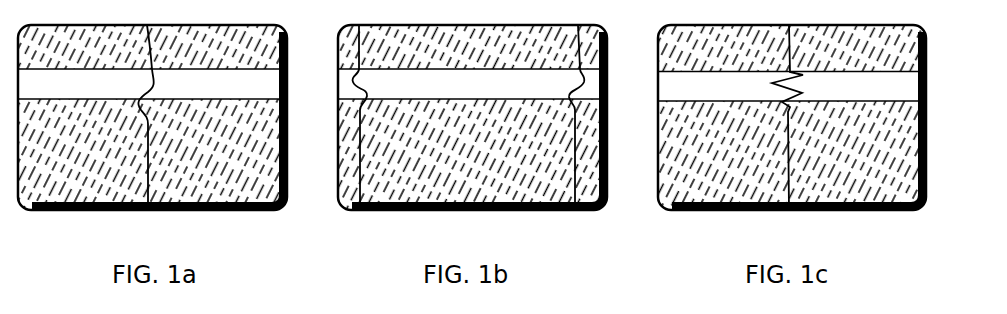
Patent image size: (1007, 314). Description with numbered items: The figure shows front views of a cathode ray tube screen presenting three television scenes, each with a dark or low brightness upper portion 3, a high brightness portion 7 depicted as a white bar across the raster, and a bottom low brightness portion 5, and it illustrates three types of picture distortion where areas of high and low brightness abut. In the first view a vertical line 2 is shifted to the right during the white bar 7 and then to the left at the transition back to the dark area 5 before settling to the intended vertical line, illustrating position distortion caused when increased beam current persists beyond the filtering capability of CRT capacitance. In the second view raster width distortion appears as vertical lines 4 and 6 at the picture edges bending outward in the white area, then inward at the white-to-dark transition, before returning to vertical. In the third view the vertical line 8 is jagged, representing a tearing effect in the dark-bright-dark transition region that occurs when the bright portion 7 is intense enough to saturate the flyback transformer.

In FIG. 1A, the vertical line 2 is at (148, 155).
In FIG. 1A, the upper portion 3 is at (243, 44).
In FIG. 1B, the vertical line 4 is at (359, 173).
In FIG. 1A, the bottom low brightness portion 5 is at (241, 138).
In FIG. 1B, the vertical line 6 is at (578, 135).
In FIG. 1A, the high brightness portion 7 is at (248, 81).
In FIG. 1C, the zigzag dividing line 8 is at (787, 158).